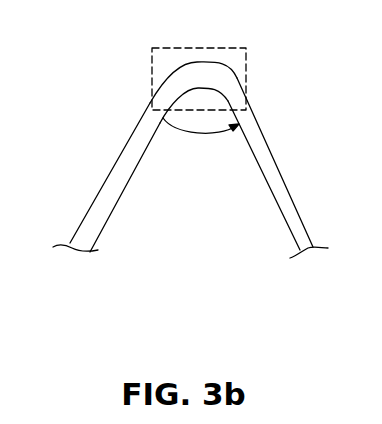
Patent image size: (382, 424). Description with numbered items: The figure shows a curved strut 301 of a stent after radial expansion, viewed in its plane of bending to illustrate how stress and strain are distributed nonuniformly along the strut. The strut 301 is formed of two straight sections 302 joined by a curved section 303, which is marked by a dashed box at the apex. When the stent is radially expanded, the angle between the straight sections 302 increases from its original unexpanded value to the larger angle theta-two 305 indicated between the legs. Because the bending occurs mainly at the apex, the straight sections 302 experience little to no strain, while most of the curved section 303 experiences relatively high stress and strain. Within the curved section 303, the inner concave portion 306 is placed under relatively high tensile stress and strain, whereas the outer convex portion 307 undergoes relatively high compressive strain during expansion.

The curved strut 301 is at (172, 275).
The straight sections 302 is at (100, 190).
The curved section 303 is at (247, 70).
The angle θ2 305 is at (175, 129).
The concave portion 306 is at (202, 88).
The convex portion 307 is at (202, 62).